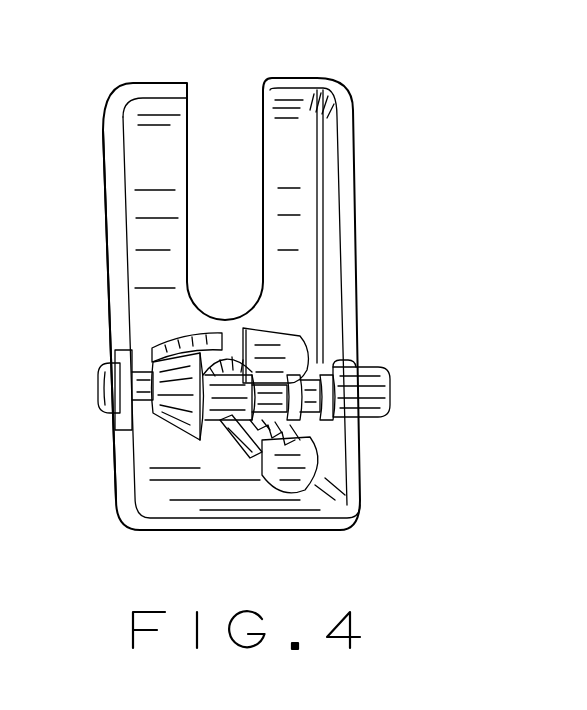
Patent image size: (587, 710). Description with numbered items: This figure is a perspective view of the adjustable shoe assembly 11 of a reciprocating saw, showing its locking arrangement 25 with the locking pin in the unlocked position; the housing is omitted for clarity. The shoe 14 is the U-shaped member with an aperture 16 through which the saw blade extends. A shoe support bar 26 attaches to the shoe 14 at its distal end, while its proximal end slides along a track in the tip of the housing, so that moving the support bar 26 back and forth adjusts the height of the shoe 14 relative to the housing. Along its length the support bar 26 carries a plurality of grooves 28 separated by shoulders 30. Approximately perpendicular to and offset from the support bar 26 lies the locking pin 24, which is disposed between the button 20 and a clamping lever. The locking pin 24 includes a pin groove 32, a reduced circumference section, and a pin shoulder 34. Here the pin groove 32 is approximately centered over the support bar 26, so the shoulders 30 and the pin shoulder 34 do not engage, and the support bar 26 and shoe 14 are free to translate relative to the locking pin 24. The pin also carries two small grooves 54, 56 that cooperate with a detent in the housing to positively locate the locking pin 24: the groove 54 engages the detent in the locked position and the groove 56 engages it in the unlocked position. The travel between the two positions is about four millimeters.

The adjustable shoe assembly 11 is at (206, 274).
The shoe 14 is at (231, 304).
The aperture 16 is at (229, 96).
The button 20 is at (400, 390).
The locking pin 24 is at (393, 391).
The locking arrangement 25 is at (180, 446).
The shoe support bar 26 is at (290, 473).
The grooves 28 is at (230, 463).
The shoulders 30 is at (292, 433).
The pin groove 32 is at (265, 365).
The pin shoulder 34 is at (313, 372).
The small groove 54 is at (343, 360).
The small groove 56 is at (334, 392).